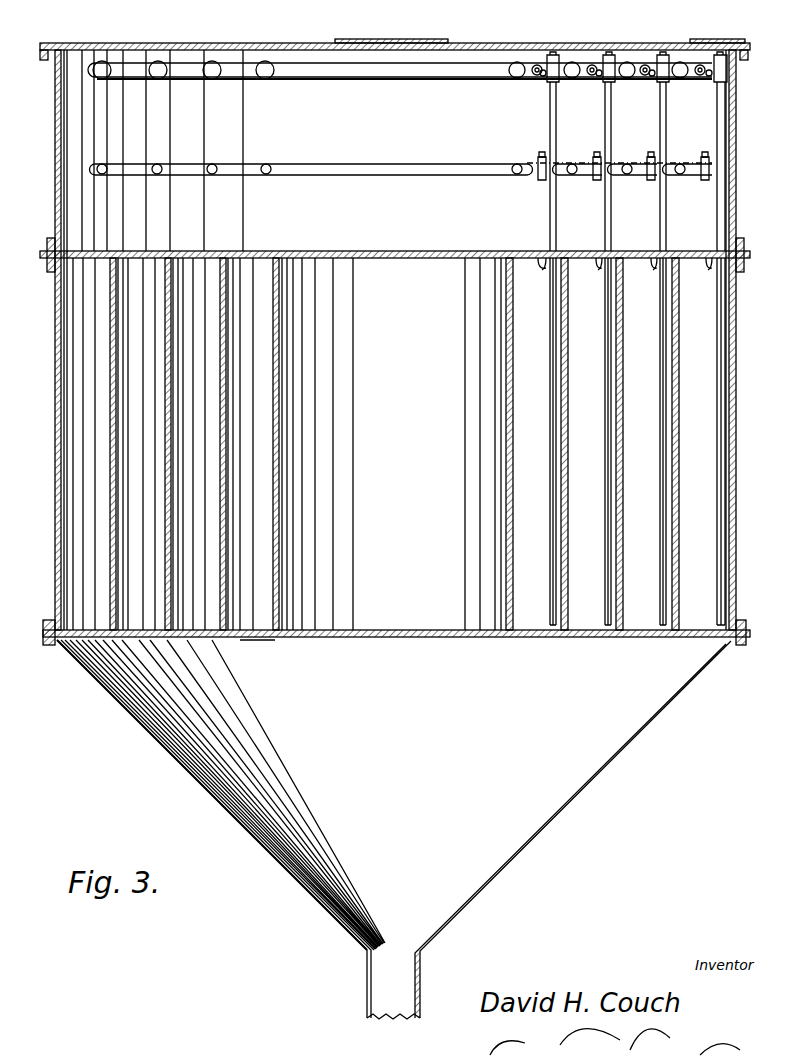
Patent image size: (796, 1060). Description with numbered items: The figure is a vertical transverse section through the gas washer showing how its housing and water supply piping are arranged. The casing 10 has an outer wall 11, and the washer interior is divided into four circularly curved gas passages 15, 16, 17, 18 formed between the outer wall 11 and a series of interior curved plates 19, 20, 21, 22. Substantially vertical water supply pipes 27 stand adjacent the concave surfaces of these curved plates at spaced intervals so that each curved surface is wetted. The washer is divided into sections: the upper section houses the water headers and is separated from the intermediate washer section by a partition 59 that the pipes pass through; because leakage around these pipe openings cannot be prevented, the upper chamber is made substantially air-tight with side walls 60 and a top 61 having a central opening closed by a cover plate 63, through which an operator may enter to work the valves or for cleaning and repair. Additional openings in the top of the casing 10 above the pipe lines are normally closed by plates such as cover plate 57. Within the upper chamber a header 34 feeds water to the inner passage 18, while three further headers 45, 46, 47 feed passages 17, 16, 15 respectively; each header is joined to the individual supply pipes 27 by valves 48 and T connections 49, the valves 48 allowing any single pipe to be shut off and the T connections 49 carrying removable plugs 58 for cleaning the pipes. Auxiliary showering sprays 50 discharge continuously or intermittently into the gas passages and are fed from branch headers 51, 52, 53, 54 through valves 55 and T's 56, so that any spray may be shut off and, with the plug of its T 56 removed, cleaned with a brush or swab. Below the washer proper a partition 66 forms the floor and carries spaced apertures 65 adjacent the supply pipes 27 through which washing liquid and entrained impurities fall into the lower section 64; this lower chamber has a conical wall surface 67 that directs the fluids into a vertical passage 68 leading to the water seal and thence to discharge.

The casing 10 is at (55, 370).
The outer wall 11 is at (737, 395).
The gas passage 15 is at (682, 441).
The gas passage 16 is at (628, 441).
The gas passage 17 is at (574, 441).
The inner gas passage 18 is at (519, 444).
The interior curved plate 19 is at (679, 498).
The interior curved plate 20 is at (624, 495).
The interior curved plate 21 is at (569, 491).
The interior curved plate 22 is at (513, 480).
The water supply pipe 27 is at (550, 598).
The header 34 is at (517, 61).
The header 45 is at (575, 61).
The header 46 is at (632, 61).
The header 47 is at (683, 61).
The valve 48 is at (534, 78).
The T connection 49 is at (546, 78).
The auxiliary showering spray 50 is at (710, 222).
The branch header 51 is at (512, 177).
The branch header 52 is at (571, 177).
The branch header 53 is at (628, 177).
The branch header 54 is at (683, 177).
The valve 55 is at (539, 158).
The T 56 is at (540, 180).
The cover plate 57 is at (712, 42).
The removable plug 58 is at (553, 54).
The partition 59 is at (338, 252).
The side wall 60 is at (55, 176).
The top 61 is at (192, 46).
The cover plate 63 is at (405, 41).
The lower section 64 is at (394, 829).
The aperture 65 is at (418, 640).
The partition 66 is at (258, 640).
The conical wall surface 67 is at (206, 787).
The vertical passage 68 is at (368, 998).